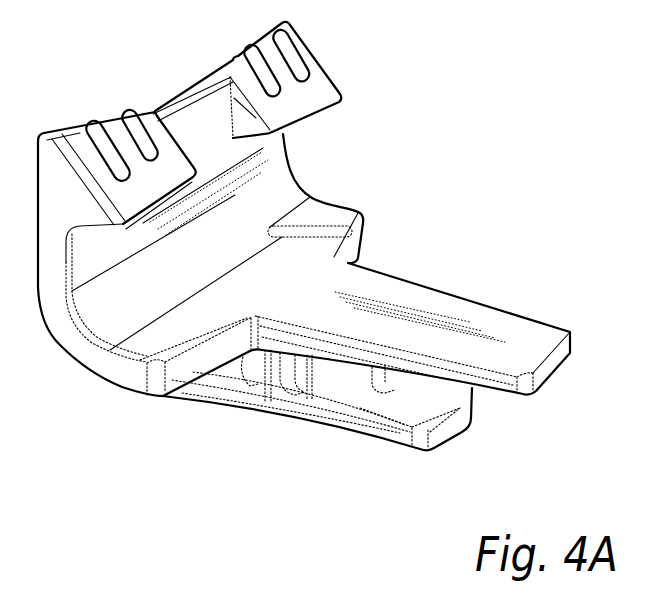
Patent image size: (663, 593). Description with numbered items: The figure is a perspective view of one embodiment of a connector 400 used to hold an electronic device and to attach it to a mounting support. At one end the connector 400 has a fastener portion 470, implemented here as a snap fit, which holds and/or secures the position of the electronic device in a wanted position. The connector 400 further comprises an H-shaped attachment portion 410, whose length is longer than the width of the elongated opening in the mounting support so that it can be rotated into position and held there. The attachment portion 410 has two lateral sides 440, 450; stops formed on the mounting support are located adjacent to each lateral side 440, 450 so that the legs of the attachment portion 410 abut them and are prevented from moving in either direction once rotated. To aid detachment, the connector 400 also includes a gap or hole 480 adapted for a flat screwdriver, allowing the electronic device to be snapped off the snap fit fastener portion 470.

The connector 400 is at (413, 137).
The H-shaped attachment portion 410 is at (430, 402).
The lateral side of the attachment portion 440 is at (407, 276).
The lateral side of the attachment portion 450 is at (328, 345).
The fastener portion 470 is at (315, 58).
The gap or hole 480 is at (190, 126).